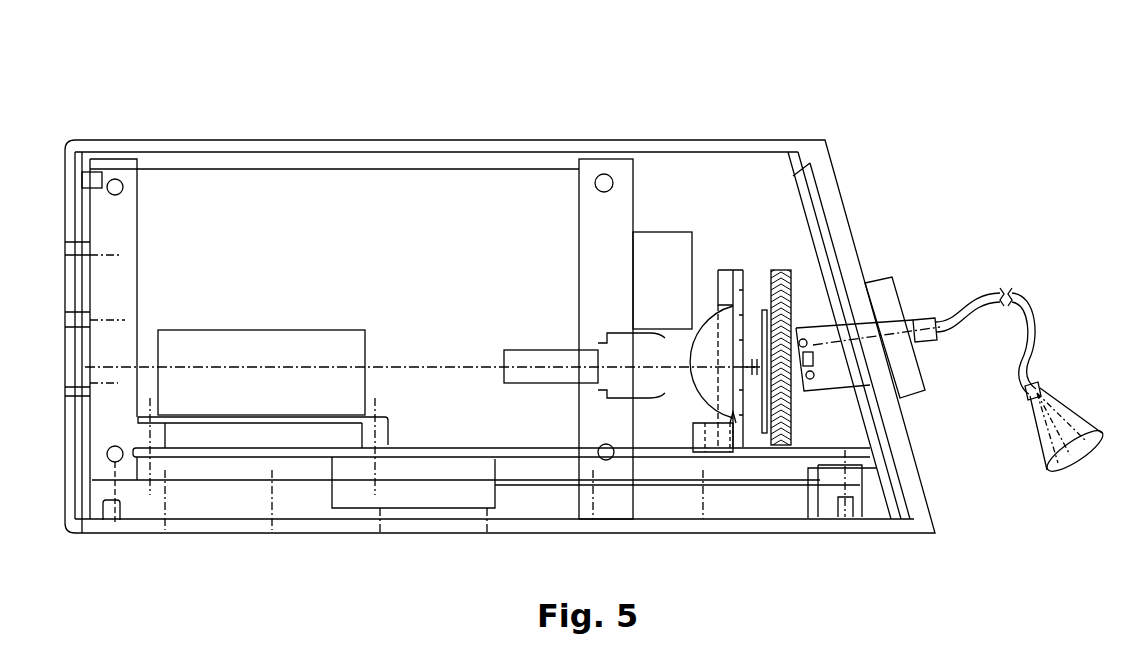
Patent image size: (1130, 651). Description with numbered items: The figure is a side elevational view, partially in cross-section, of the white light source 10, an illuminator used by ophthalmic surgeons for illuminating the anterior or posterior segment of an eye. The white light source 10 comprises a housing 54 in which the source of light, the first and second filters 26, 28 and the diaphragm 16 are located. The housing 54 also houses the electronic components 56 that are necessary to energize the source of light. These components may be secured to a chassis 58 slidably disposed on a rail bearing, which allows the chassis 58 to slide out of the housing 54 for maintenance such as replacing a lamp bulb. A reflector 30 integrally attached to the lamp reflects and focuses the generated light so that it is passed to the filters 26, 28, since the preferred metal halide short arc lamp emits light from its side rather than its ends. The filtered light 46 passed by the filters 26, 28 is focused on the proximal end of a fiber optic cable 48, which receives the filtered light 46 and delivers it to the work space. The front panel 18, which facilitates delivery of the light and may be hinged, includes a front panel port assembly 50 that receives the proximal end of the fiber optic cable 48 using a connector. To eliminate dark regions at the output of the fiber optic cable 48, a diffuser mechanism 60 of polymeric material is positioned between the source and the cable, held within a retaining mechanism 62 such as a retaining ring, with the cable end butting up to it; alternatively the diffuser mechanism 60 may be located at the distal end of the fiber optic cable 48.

The white light source 10 is at (451, 125).
The diaphragm 16 is at (766, 308).
The front panel 18 is at (834, 172).
The first filter 26 is at (785, 268).
The second filter 28 is at (775, 268).
The reflector 30 is at (685, 397).
The filtered light 46 is at (1058, 470).
The fiber optic cable 48 is at (943, 322).
The front panel port assembly 50 is at (888, 297).
The housing 54 is at (349, 138).
The electronic components 56 is at (188, 338).
The chassis 58 is at (230, 458).
The diffuser mechanism 60 is at (1043, 386).
The retaining mechanism 62 is at (800, 338).